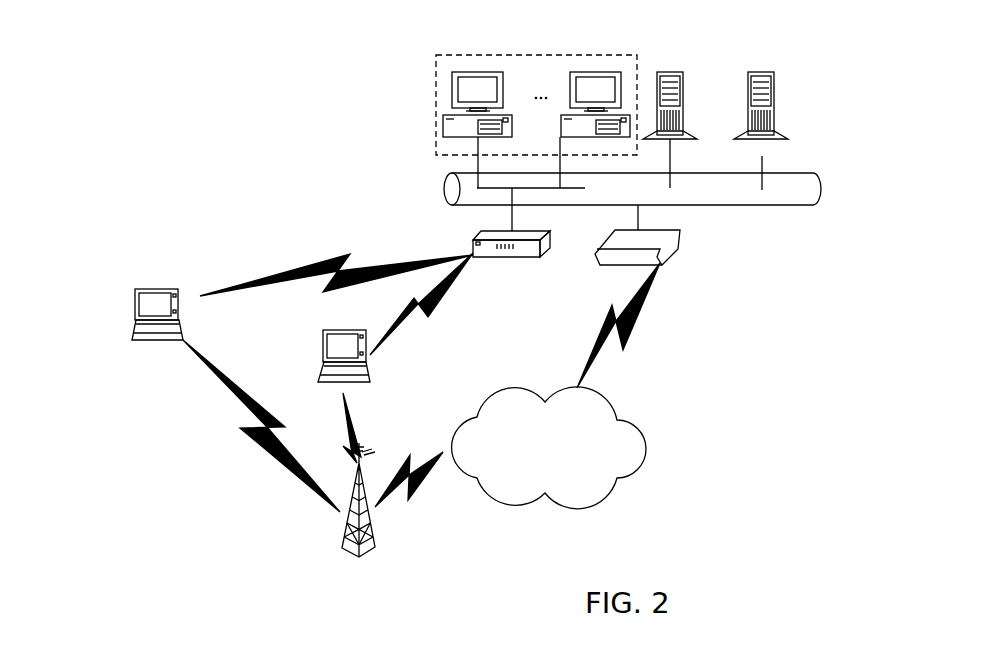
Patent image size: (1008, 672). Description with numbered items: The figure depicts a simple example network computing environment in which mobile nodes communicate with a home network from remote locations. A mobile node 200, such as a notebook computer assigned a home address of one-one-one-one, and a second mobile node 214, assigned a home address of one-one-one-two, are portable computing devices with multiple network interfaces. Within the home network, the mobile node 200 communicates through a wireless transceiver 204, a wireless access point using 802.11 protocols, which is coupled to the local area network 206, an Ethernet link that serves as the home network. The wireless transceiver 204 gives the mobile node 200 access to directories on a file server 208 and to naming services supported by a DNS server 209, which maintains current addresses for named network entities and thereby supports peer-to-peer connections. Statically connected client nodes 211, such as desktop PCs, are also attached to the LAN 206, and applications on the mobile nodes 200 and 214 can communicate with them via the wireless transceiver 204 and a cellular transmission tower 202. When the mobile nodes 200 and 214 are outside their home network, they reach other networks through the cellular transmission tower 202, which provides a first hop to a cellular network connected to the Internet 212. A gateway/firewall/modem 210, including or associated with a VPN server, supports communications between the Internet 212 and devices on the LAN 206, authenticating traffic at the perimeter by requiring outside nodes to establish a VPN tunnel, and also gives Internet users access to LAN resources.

The mobile node 200 is at (158, 285).
The cellular transmission tower 202 is at (345, 587).
The wireless transceiver 204 is at (507, 260).
The local area network 206 is at (812, 183).
The file server 208 is at (687, 88).
The DNS server 209 is at (777, 88).
The gateway/firewall/modem 210 is at (670, 263).
The statically connected client nodes 211 is at (590, 53).
The Internet 212 is at (563, 472).
The mobile node 214 is at (320, 363).